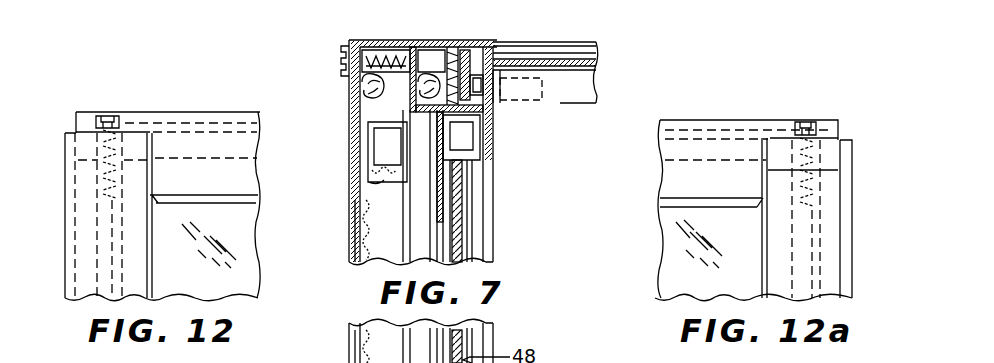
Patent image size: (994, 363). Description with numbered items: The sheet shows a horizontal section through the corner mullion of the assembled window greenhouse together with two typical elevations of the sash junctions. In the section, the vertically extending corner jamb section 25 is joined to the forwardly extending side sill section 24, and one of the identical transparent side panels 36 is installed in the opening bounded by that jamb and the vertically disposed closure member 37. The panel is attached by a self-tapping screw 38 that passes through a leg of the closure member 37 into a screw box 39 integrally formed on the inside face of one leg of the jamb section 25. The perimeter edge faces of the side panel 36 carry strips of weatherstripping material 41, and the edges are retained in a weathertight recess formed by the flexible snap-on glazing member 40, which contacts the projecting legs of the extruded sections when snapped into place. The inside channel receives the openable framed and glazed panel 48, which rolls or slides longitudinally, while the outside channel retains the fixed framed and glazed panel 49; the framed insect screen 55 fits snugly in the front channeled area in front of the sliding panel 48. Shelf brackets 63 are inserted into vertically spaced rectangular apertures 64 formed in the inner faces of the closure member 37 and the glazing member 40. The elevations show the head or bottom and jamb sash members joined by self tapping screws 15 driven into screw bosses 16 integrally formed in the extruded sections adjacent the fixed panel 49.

In FIG. 12, the self tapping screw 15 is at (120, 114).
In FIG. 7, the self tapping screw 15 is at (340, 56).
In FIG. 12A, the self tapping screw 15 is at (800, 118).
In FIG. 12, the screw boss 16 is at (100, 239).
In FIG. 7, the screw boss 16 is at (350, 96).
In FIG. 12A, the screw boss 16 is at (815, 250).
In FIG. 7, the side sill section 24 is at (557, 46).
In FIG. 7, the corner jamb section 25 is at (383, 30).
In FIG. 7, the transparent side panel 36 is at (598, 66).
In FIG. 7, the closure member 37 is at (497, 132).
In FIG. 7, the self-tapping screw 38 is at (450, 46).
In FIG. 7, the screw box 39 is at (446, 42).
In FIG. 7, the snap-on glazing member 40 is at (572, 100).
In FIG. 7, the weatherstripping material 41 is at (498, 50).
In FIG. 7, the framed and glazed panel 48 is at (472, 236).
In FIG. 12, the framed and glazed panel 49 is at (202, 289).
In FIG. 12A, the framed and glazed panel 49 is at (716, 289).
In FIG. 7, the framed insect screen 55 is at (348, 194).
In FIG. 7, the shelf bracket 63 is at (526, 114).
In FIG. 7, the rectangular aperture 64 is at (527, 135).